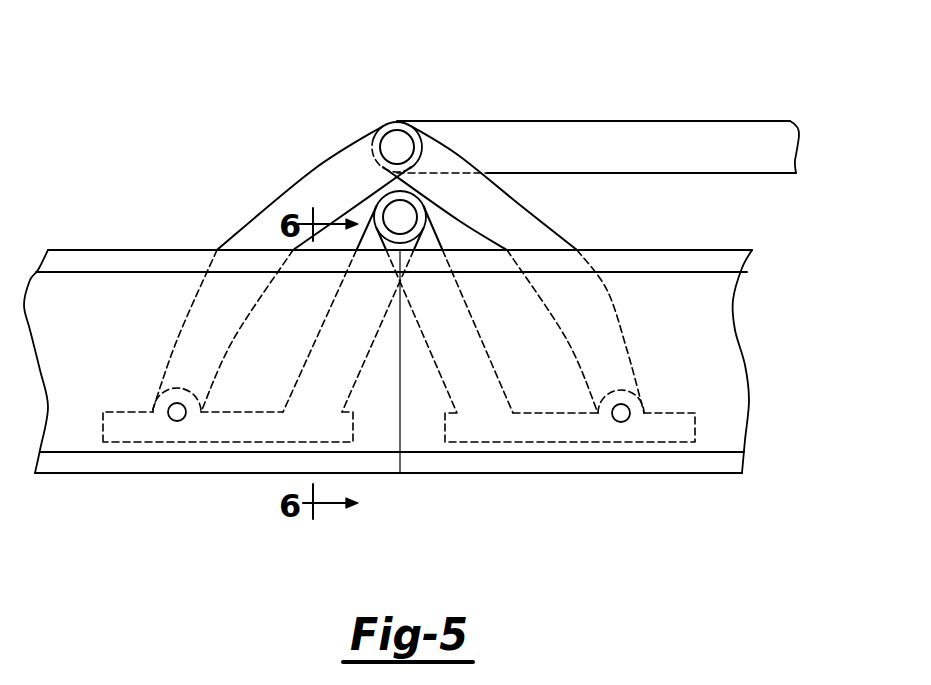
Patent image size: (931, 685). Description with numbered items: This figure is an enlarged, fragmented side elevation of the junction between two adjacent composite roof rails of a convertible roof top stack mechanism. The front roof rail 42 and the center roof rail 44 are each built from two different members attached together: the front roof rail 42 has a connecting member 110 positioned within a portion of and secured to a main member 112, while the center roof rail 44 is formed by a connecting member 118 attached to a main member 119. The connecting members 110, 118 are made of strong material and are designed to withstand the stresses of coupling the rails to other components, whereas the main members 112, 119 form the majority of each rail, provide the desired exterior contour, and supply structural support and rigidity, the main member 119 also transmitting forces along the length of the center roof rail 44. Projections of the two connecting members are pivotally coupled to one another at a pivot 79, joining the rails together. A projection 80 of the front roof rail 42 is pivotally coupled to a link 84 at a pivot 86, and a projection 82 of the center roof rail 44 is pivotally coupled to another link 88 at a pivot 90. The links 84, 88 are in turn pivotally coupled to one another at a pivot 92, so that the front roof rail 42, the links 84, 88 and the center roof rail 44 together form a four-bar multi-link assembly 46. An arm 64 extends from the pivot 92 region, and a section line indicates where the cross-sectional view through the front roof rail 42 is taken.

The front roof rail 42 is at (69, 285).
The center roof rail 44 is at (710, 307).
The multi-link assembly 46 is at (450, 72).
The lever arm 64 is at (788, 135).
The pivot 79 is at (402, 215).
The projection 80 is at (160, 408).
The projection 82 is at (643, 404).
The link 84 is at (340, 158).
The pivot 86 is at (203, 408).
The link 88 is at (537, 222).
The pivot 90 is at (597, 408).
The pivot 92 is at (396, 145).
The connecting member 110 is at (212, 430).
The main member 112 is at (67, 436).
The connecting member 118 is at (487, 427).
The main member 119 is at (715, 432).